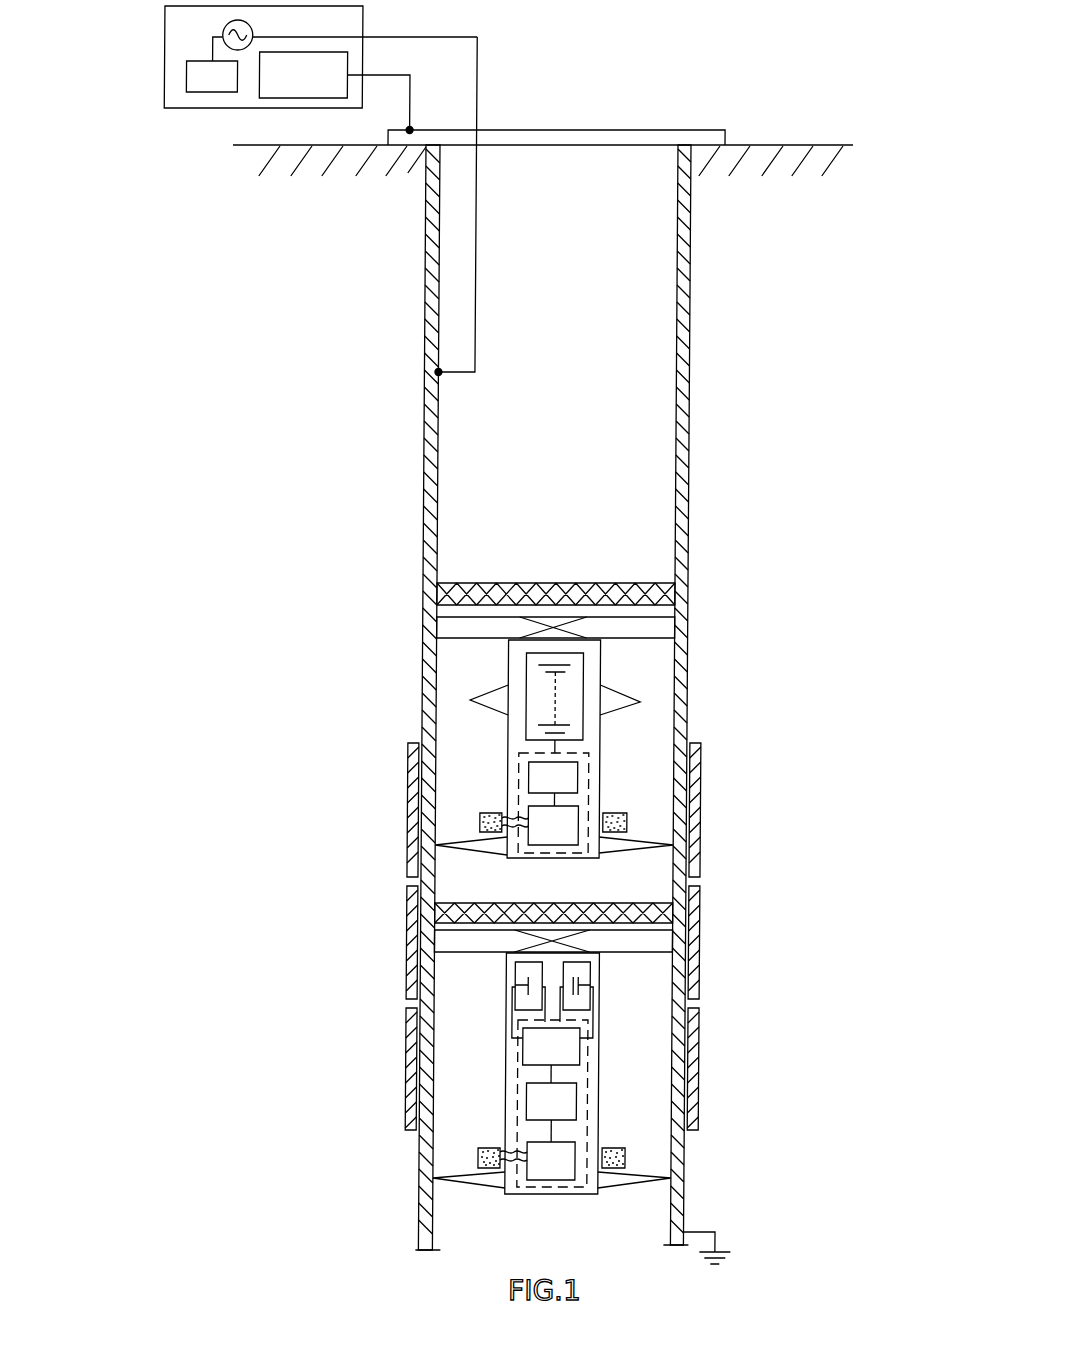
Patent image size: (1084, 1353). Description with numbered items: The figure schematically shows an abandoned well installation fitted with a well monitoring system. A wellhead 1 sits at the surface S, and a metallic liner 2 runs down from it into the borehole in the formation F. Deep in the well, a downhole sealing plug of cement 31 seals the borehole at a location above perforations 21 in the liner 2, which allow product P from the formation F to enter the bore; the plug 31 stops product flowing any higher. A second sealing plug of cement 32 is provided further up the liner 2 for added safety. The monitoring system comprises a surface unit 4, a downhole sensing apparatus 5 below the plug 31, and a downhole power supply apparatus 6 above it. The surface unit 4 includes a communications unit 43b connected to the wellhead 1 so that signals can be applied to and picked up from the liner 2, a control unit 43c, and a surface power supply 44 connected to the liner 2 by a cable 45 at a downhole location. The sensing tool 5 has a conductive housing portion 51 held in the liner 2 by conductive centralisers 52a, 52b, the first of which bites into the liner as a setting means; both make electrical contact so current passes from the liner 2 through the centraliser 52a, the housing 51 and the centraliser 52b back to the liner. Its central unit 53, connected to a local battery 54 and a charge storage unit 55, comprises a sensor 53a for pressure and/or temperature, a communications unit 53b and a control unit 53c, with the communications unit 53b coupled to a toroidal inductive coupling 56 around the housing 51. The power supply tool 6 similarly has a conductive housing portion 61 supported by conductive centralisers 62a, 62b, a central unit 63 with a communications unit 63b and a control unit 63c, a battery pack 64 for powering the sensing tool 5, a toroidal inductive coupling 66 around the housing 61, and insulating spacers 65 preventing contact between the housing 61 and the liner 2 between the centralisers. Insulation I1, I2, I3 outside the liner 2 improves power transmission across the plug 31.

The wellhead 1 is at (673, 130).
The metallic liner 2 is at (694, 380).
The surface unit 4 is at (186, 126).
The downhole sensing apparatus 5 is at (613, 980).
The downhole power supply apparatus 6 is at (596, 662).
The perforations 21 is at (686, 1058).
The downhole sealing plug of cement 31 is at (686, 900).
The second sealing plug of cement 32 is at (652, 592).
The communications unit 43b is at (302, 98).
The control unit 43c is at (213, 92).
The surface power supply 44 is at (228, 26).
The cable 45 is at (478, 283).
The conductive housing portion 51 is at (513, 982).
The first conductive centraliser 52a is at (454, 942).
The second conductive centraliser 52b is at (480, 1181).
The central unit 53 is at (610, 1043).
The sensor 53a is at (584, 1108).
The communications unit 53b is at (573, 1183).
The control unit 53c is at (572, 1058).
The local battery 54 is at (527, 970).
The charge storage unit 55 is at (591, 964).
The toroidal inductive coupling 56 is at (633, 1158).
The conductive housing portion 61 is at (513, 667).
The first conductive centraliser 62a is at (456, 630).
The second conductive centraliser 62b is at (478, 843).
The central unit 63 is at (608, 748).
The communications unit 63b is at (578, 815).
The control unit 63c is at (570, 777).
The battery pack 64 is at (535, 677).
The insulating spacers 65 is at (620, 697).
The toroidal inductive coupling 66 is at (486, 816).
The insulation I1 is at (414, 752).
The insulation I2 is at (414, 890).
The insulation I3 is at (414, 1027).
The ground surface S is at (764, 145).
The formation F is at (868, 872).
The product P is at (312, 1143).